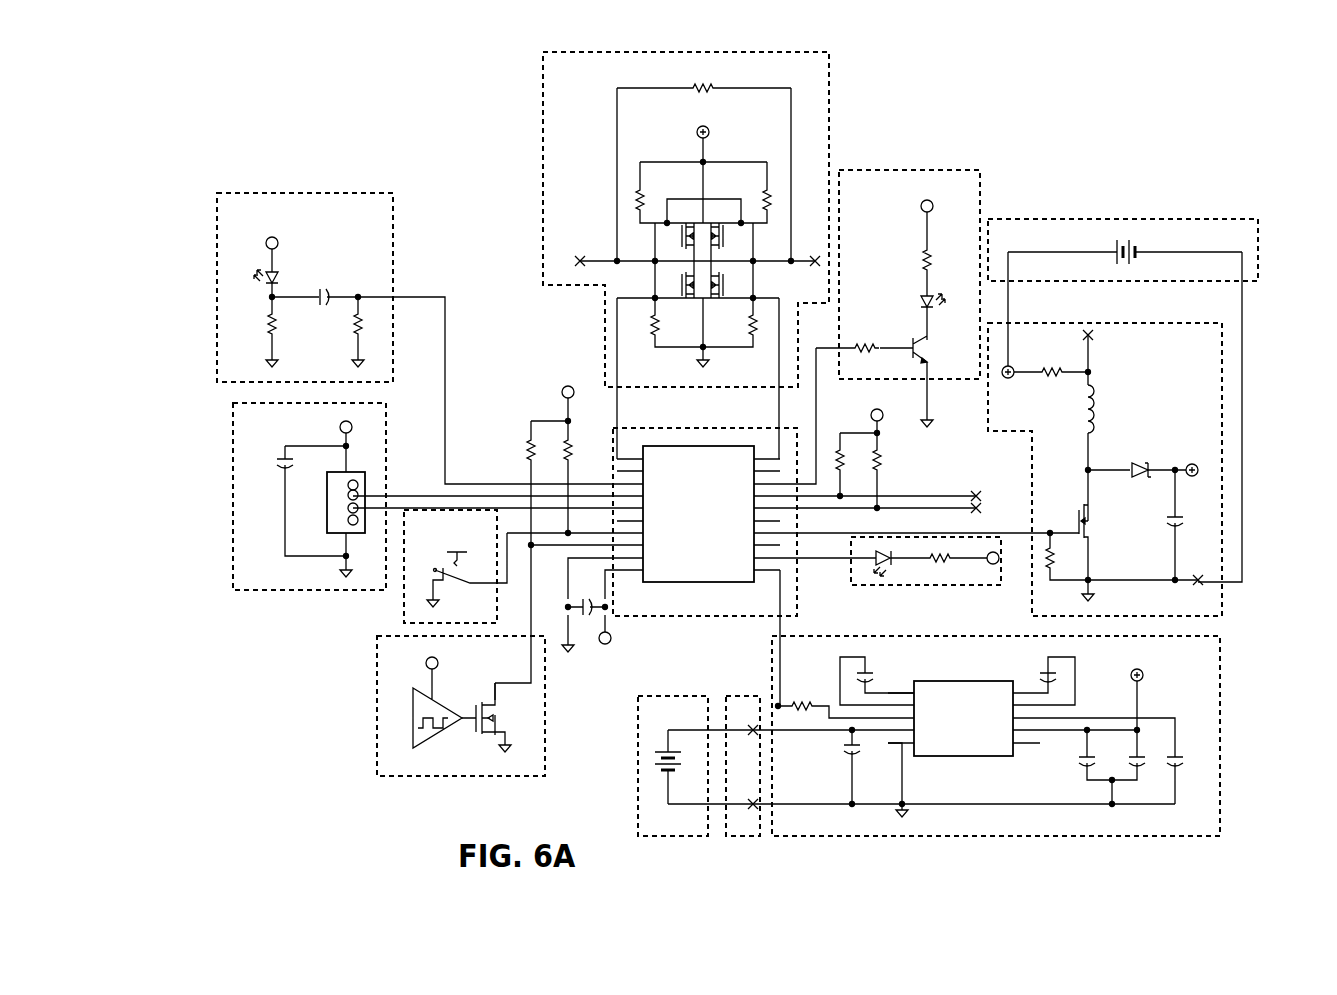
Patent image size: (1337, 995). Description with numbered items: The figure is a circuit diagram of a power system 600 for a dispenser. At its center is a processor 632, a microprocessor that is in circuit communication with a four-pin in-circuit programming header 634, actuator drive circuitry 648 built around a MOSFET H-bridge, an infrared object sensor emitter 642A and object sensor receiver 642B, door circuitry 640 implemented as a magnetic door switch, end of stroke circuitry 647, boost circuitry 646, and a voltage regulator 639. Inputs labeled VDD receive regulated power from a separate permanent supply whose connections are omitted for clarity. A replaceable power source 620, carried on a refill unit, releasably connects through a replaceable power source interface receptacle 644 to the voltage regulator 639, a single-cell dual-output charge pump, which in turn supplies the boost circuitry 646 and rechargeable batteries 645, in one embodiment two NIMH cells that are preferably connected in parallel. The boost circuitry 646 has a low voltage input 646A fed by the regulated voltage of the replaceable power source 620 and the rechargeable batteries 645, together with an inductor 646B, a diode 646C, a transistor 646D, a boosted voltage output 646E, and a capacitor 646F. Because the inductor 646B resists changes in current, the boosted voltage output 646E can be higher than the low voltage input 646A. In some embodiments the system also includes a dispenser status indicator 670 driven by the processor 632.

The power system 600 is at (756, 444).
The replaceable power source 620 is at (638, 730).
The processor 632 is at (703, 616).
The header 634 is at (267, 590).
The voltage regulator 639 is at (1220, 674).
The door circuitry 640 is at (377, 696).
The object sensor emitter 642A is at (896, 170).
The object sensor receiver 642B is at (254, 193).
The replaceable power source interface receptacle 644 is at (748, 696).
The rechargeable batteries 645 is at (1120, 219).
The boost circuitry 646 is at (1148, 452).
The low voltage input 646A is at (1016, 364).
The inductor 646B is at (1080, 399).
The diode 646C is at (1135, 463).
The transistor 646D is at (1101, 531).
The boosted voltage output 646E is at (1217, 466).
The capacitor 646F is at (1185, 521).
The end of stroke circuitry 647 is at (404, 598).
The actuator drive circuitry 648 is at (830, 77).
The dispenser status indicator 670 is at (938, 585).